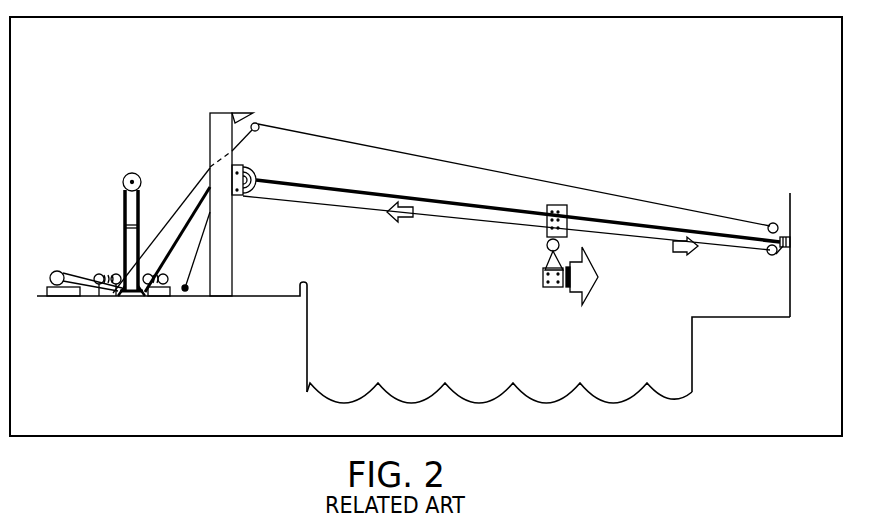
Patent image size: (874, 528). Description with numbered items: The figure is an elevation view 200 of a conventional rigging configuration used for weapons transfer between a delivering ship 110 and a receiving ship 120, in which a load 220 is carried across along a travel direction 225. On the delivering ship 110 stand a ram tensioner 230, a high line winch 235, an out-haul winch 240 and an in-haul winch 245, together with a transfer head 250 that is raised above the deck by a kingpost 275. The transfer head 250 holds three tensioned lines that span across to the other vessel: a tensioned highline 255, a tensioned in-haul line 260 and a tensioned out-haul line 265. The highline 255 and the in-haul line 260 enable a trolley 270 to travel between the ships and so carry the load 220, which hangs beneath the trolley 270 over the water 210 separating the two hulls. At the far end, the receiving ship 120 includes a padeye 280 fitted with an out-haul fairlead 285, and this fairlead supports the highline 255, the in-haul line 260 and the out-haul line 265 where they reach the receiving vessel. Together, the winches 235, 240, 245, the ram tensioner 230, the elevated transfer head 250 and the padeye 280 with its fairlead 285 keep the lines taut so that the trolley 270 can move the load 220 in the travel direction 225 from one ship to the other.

The elevation view 200 is at (700, 88).
The delivering ship 110 is at (264, 348).
The receiving ship 120 is at (749, 366).
The water 210 is at (497, 430).
The load 220 is at (542, 275).
The travel direction 225 is at (578, 292).
The ram tensioner 230 is at (130, 172).
The high line winch 235 is at (58, 270).
The out-haul winch 240 is at (153, 297).
The in-haul winch 245 is at (170, 297).
The transfer head 250 is at (255, 165).
The highline 255 is at (380, 188).
The in-haul line 260 is at (300, 200).
The out-haul line 265 is at (655, 243).
The trolley 270 is at (558, 203).
The kingpost 275 is at (222, 112).
The padeye 280 is at (783, 232).
The out-haul fairlead 285 is at (768, 225).